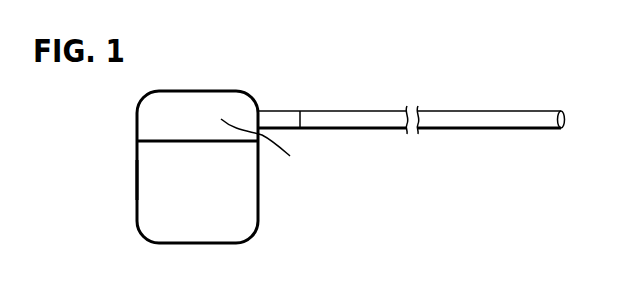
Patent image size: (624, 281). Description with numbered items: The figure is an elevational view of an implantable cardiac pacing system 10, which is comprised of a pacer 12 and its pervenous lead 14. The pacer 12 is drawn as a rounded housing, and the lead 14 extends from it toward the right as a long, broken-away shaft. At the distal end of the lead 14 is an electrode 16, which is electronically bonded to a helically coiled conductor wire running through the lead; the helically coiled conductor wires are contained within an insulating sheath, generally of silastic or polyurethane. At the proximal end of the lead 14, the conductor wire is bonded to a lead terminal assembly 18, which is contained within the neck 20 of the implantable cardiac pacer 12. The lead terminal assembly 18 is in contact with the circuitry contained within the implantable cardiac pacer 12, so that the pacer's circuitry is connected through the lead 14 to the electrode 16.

The implantable cardiac pacing system 10 is at (200, 91).
The pacer 12 is at (137, 167).
The pervenous lead 14 is at (356, 110).
The electrode 16 is at (565, 114).
The lead terminal assembly 18 is at (279, 112).
The neck 20 is at (267, 143).